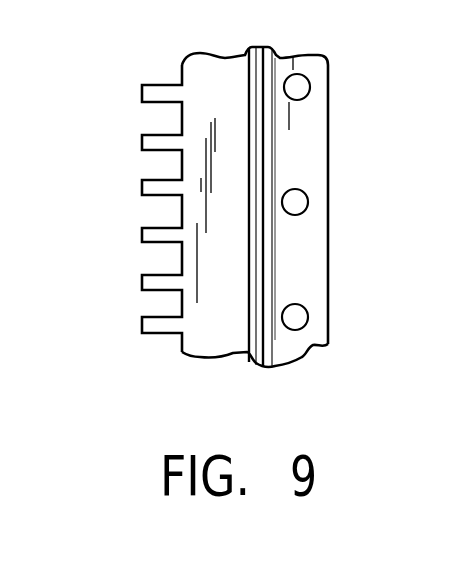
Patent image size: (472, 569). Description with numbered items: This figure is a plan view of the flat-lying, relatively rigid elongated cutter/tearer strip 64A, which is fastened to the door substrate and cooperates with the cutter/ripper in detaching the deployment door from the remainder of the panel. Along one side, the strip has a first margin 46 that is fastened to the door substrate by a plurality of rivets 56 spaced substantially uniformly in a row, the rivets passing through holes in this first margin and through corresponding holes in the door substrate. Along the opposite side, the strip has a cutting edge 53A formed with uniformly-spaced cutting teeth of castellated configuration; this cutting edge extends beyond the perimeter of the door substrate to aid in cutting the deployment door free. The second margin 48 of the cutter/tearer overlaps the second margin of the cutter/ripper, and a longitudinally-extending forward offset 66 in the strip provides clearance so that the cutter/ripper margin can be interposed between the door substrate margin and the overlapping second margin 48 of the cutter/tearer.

The cutter/tearer strip 64A is at (216, 210).
The cutting edge 53A is at (128, 202).
The first margin 46 is at (308, 253).
The second margin 48 is at (200, 337).
The rivets 56 is at (304, 192).
The forward offset 66 is at (248, 328).